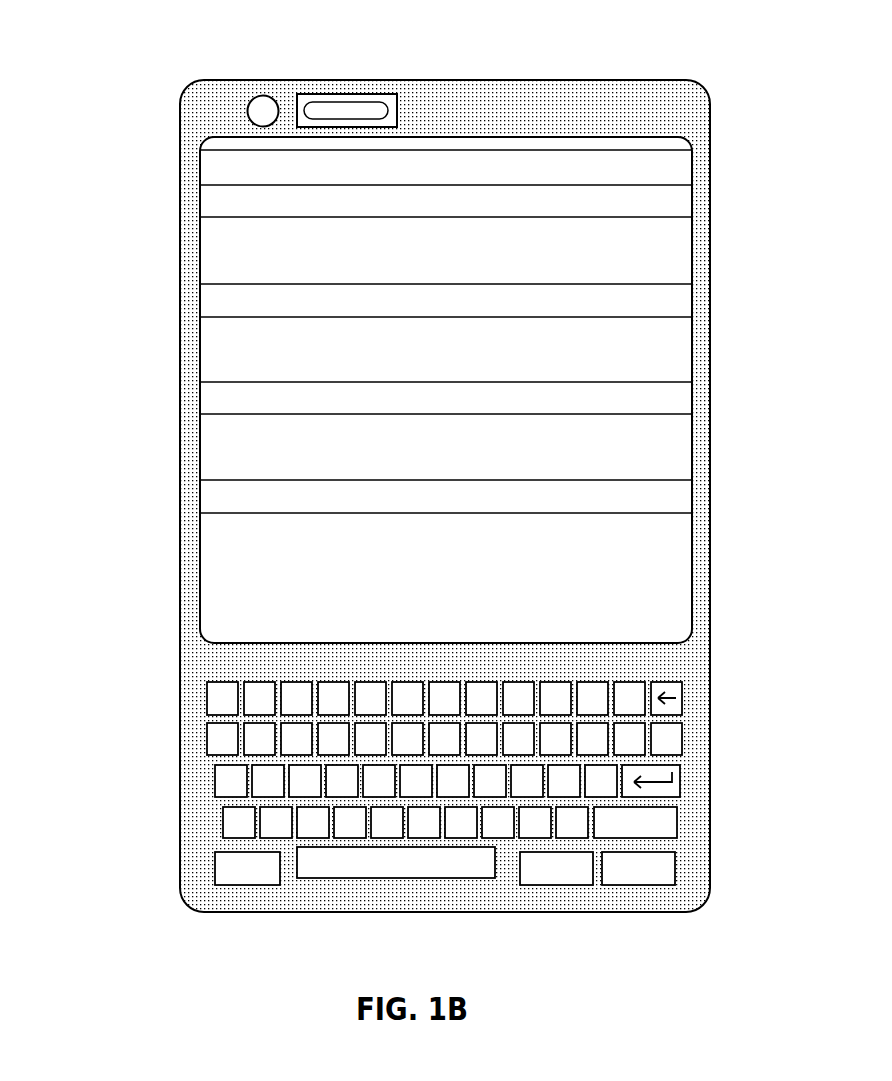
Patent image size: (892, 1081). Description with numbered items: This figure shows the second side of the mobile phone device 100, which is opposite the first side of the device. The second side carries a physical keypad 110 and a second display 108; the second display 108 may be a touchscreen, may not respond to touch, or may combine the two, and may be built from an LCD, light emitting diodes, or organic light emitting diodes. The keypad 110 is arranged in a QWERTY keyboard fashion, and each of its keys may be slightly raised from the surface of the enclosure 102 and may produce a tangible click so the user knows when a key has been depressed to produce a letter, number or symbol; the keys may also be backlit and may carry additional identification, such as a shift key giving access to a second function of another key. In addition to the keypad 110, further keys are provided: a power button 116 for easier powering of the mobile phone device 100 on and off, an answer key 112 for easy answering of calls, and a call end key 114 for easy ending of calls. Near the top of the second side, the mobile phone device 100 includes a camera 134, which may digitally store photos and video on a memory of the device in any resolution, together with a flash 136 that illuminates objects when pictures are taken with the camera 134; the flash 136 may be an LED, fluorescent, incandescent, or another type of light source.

The mobile phone device 100 is at (423, 495).
The enclosure 102 is at (710, 243).
The second display 108 is at (660, 578).
The keypad 110 is at (691, 754).
The answer key 112 is at (563, 887).
The call end key 114 is at (677, 887).
The power button 116 is at (211, 893).
The camera 134 is at (259, 94).
The flash 136 is at (350, 93).